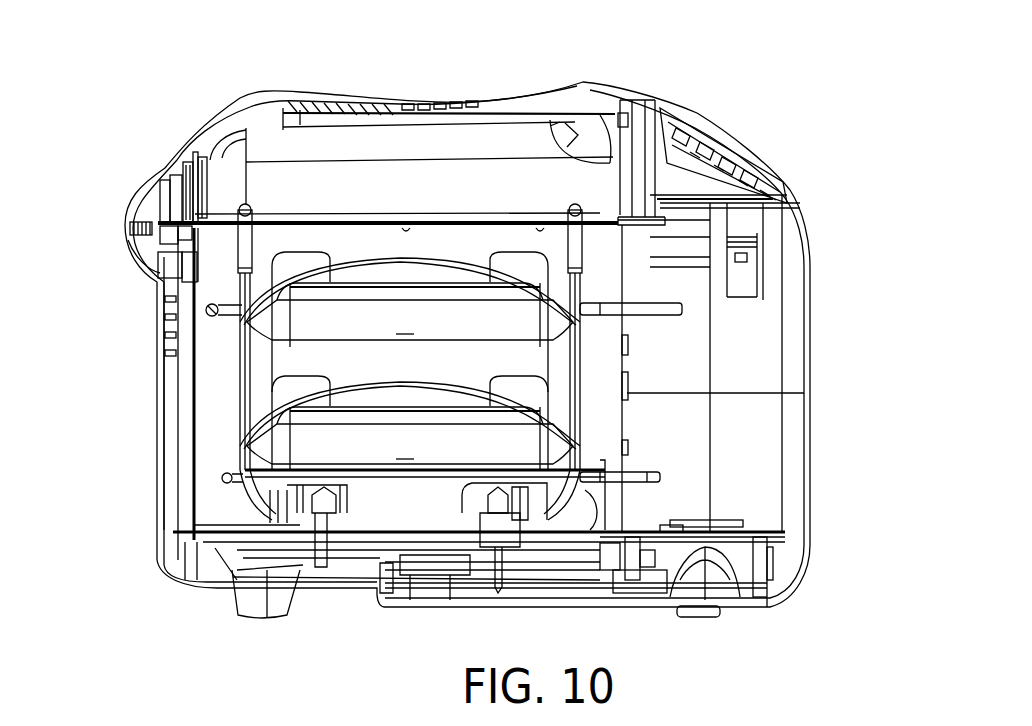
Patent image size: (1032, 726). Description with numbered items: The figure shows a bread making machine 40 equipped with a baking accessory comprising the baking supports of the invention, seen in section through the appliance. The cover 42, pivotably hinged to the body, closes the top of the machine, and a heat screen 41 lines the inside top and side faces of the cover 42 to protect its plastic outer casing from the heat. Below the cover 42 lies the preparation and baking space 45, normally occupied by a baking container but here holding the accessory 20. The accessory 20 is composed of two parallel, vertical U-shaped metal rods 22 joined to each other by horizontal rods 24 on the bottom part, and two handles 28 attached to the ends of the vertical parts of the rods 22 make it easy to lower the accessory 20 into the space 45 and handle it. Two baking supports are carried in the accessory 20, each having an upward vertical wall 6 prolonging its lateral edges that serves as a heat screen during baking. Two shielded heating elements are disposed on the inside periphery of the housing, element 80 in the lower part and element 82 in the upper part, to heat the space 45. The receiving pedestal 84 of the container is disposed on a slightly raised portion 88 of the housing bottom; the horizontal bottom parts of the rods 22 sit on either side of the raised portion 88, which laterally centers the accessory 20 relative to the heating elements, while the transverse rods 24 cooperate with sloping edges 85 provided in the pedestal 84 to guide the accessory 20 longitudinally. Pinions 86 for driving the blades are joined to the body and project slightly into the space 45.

The bread making machine 40 is at (783, 142).
The heat screen 41 is at (212, 124).
The cover 42 is at (595, 98).
The preparation and baking space 45 is at (590, 392).
The handles 28 is at (238, 208).
The accessory 20 is at (220, 360).
The heating element 82 is at (206, 310).
The vertical U-shaped metal rods 22 is at (240, 391).
The upward vertical wall 6 is at (441, 275).
The receiving pedestal 84 is at (660, 477).
The pinions 86 is at (552, 492).
The heating element 80 is at (222, 478).
The raised portion 88 is at (257, 527).
The sloping edges 85 is at (342, 528).
The horizontal rods 24 is at (479, 500).